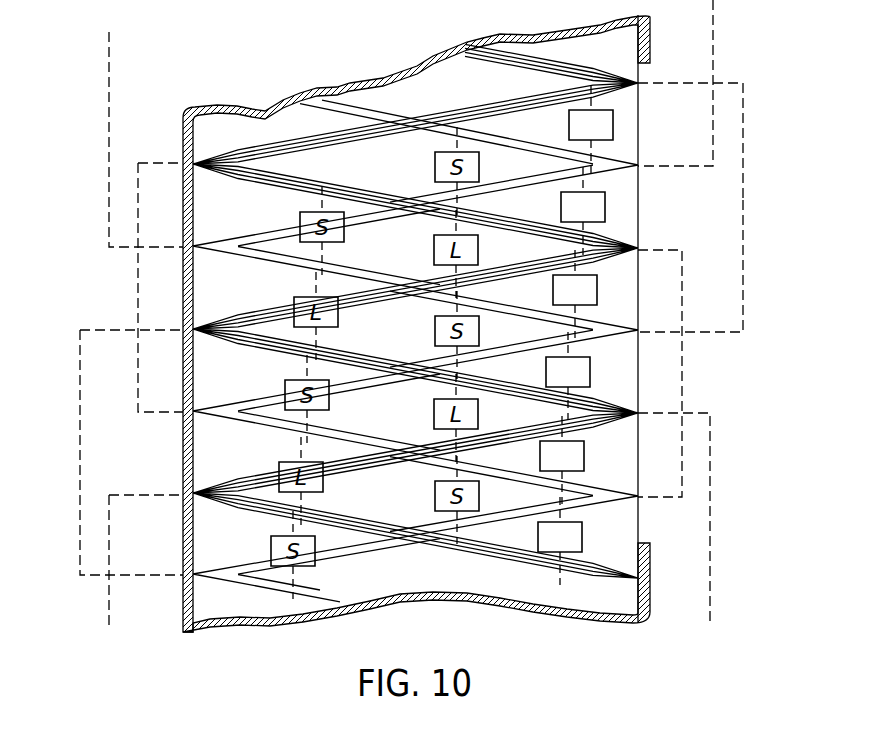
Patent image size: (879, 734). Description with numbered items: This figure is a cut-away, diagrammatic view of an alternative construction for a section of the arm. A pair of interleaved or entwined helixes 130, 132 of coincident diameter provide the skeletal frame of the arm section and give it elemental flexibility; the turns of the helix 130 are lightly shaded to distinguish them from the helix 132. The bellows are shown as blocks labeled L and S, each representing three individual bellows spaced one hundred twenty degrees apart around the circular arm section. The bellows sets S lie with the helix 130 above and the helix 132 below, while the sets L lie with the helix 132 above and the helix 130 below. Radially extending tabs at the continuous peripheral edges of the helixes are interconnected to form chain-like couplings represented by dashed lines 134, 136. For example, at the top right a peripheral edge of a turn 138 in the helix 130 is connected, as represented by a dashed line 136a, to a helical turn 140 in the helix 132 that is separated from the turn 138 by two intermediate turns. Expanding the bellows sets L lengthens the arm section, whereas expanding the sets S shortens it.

The helix 130 is at (607, 420).
The helix 132 is at (607, 497).
The dashed line 134 is at (109, 213).
The dashed line 136 is at (716, 333).
The dashed line 136a is at (743, 130).
The turn 138 is at (593, 72).
The helical turn 140 is at (607, 327).